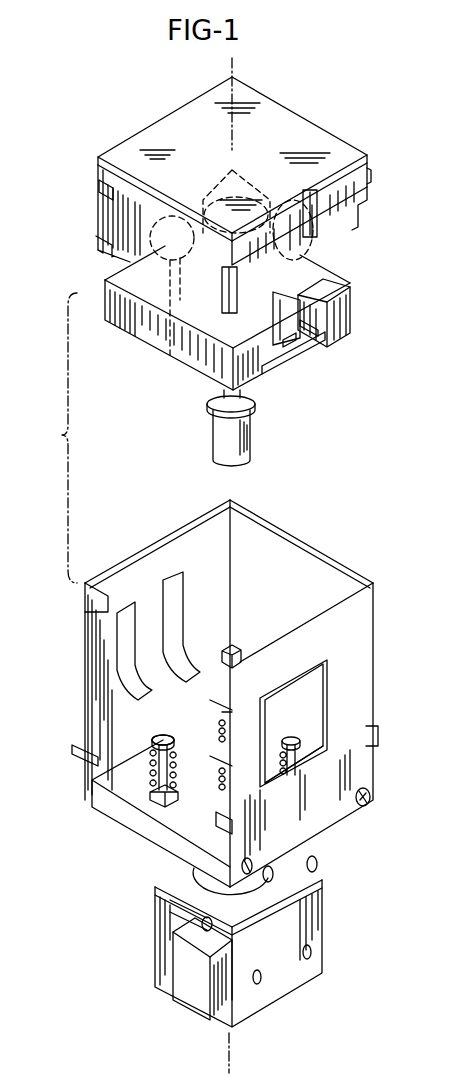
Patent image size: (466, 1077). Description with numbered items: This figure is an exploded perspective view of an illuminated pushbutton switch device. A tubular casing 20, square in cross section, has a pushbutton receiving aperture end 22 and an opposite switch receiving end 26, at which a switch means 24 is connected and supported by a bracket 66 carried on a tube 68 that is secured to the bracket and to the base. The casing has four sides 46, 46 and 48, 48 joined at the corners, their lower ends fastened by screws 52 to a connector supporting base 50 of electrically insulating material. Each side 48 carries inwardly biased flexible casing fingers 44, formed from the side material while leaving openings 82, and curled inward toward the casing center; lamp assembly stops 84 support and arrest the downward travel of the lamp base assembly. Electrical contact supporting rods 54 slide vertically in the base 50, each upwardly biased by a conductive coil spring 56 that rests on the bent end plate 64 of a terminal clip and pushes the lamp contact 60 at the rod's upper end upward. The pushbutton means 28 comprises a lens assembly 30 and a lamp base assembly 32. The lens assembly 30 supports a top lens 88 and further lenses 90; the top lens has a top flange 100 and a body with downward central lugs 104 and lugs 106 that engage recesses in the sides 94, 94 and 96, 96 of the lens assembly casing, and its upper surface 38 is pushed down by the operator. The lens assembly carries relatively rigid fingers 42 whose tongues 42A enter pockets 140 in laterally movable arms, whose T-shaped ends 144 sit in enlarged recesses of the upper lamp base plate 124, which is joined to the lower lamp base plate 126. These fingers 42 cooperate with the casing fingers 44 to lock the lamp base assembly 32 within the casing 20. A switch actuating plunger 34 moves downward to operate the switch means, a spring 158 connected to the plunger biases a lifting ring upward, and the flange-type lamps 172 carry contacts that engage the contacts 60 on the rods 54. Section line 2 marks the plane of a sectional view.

The section line 2- 2 is at (223, 77).
The casing 20 is at (243, 778).
The casing aperture end 22 is at (232, 707).
The switch means 24 is at (197, 988).
The switch means receiving end 26 is at (301, 936).
The pushbutton means 28 is at (407, 147).
The lens assembly 30 is at (232, 244).
The lamp base assembly 32 is at (242, 360).
The switch actuating plunger 34 is at (230, 432).
The upper surface of the lens 38 is at (222, 156).
The lens assembly fingers 42 is at (336, 326).
The tongues of the fingers 42A is at (293, 340).
The casing fingers 44 is at (130, 620).
The casing sides 46 is at (287, 542).
The casing sides 48 is at (153, 540).
The connector supporting base 50 is at (140, 825).
The screws 52 is at (365, 800).
The electrical contact supporting rods 54 is at (165, 762).
The coil spring 56 is at (227, 723).
The lamp contacts 60 is at (167, 738).
The bent end plate 64 is at (167, 800).
The bracket 66 is at (317, 925).
The tube 68 is at (243, 885).
The openings 82 is at (327, 725).
The lamp assembly stops 84 is at (233, 647).
The top lens 88 is at (127, 147).
The lenses 90 is at (322, 200).
The sides of lens assembly casing 94 is at (358, 227).
The sides of lens assembly casing 96 is at (130, 262).
The top flange 100 is at (347, 163).
The downward central lugs 104 is at (177, 220).
The lugs 106 is at (93, 193).
The upper lamp base plate 124 is at (343, 303).
The lower lamp base plate 126 is at (132, 330).
The pockets 140 is at (330, 338).
The T-shaped ends 144 is at (270, 363).
The spring 158 is at (207, 403).
The lamps 172 is at (290, 153).